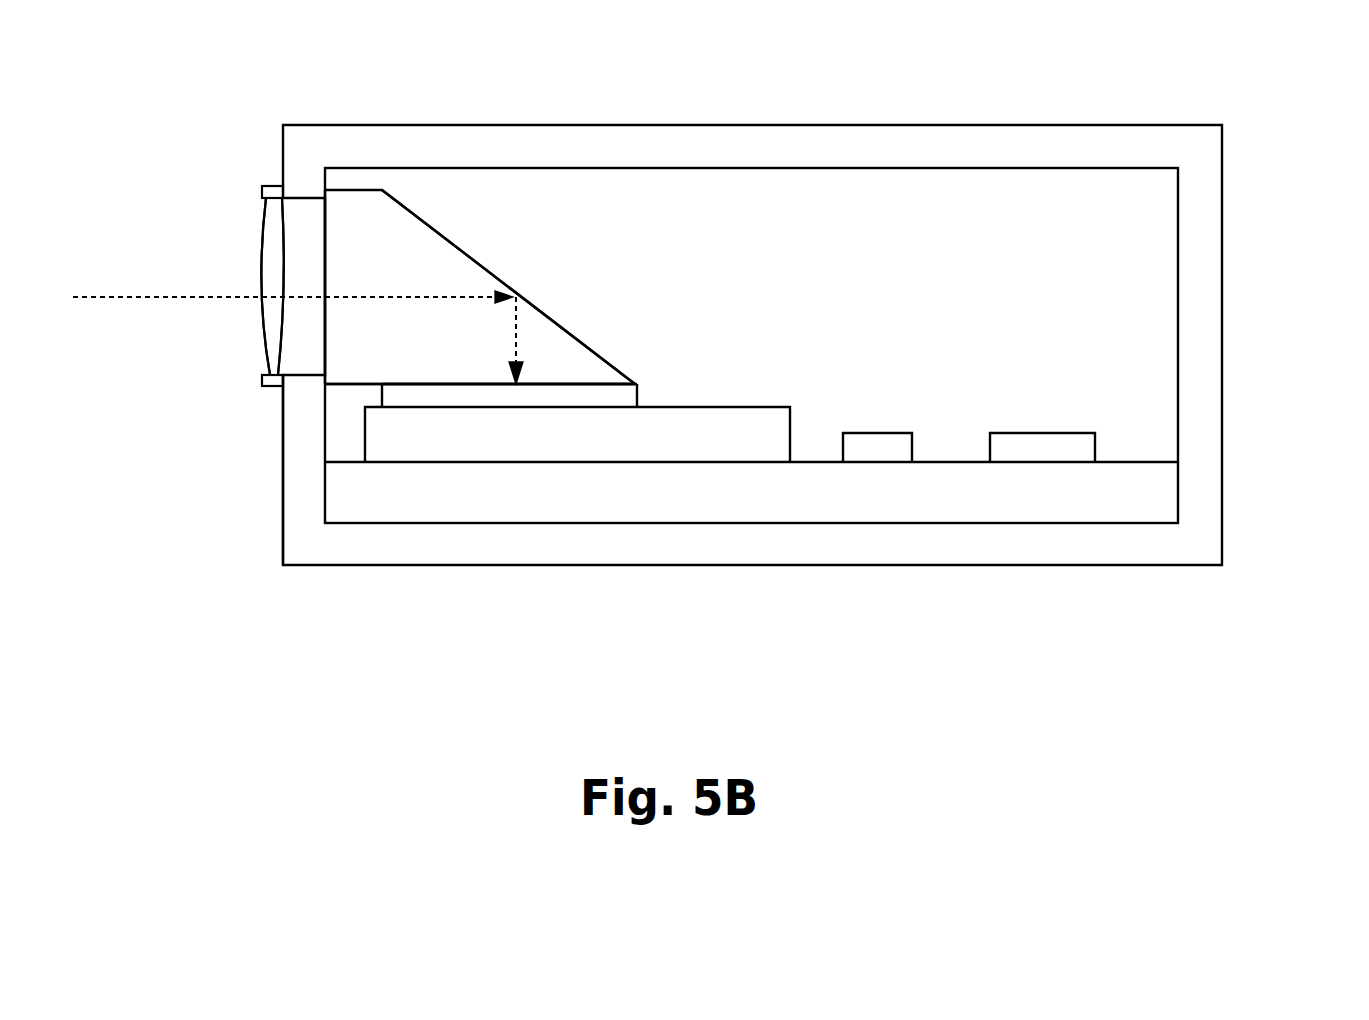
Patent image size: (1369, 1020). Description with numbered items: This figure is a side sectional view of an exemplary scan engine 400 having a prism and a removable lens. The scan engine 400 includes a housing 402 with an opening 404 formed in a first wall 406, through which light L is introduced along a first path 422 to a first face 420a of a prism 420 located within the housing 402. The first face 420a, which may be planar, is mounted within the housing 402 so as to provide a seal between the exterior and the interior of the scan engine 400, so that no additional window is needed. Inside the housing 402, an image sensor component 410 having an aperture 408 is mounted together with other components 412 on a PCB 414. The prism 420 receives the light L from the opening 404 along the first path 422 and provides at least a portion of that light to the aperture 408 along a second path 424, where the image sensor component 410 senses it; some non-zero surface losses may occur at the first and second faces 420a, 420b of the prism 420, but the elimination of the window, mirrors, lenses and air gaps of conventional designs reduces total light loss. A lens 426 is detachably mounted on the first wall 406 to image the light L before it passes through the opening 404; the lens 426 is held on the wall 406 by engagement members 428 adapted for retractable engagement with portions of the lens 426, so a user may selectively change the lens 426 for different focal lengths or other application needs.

The scan engine 400 is at (1252, 77).
The housing 402 is at (1198, 420).
The opening 404 is at (178, 196).
The first wall 406 is at (305, 463).
The aperture 408 is at (638, 399).
The image sensor component 410 is at (532, 453).
The other components 412 is at (887, 440).
The PCB 414 is at (1157, 502).
The prism 420 is at (500, 280).
The first face 420a is at (325, 349).
The second face 420b is at (440, 384).
The first path 422 is at (425, 297).
The second path 424 is at (516, 338).
The lens 426 is at (262, 308).
The engagement members 428 is at (263, 187).
The light L is at (137, 297).